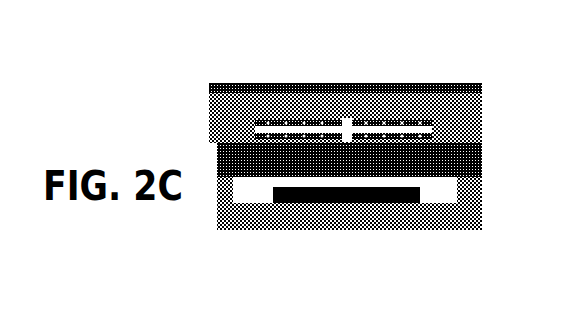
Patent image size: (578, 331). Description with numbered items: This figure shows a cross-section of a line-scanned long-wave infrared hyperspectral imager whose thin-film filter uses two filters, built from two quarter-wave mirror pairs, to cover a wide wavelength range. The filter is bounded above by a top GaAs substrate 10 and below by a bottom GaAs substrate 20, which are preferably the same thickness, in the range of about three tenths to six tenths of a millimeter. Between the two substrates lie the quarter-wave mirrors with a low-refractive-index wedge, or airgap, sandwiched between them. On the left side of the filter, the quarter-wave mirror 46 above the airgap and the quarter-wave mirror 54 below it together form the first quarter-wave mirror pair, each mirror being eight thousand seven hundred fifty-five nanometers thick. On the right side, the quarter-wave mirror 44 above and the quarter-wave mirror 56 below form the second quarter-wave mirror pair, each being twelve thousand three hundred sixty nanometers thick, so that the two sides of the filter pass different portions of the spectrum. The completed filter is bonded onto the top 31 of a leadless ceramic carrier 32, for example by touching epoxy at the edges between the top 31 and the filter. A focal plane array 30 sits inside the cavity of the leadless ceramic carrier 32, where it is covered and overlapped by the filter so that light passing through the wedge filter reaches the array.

The top GaAs substrate 10 is at (457, 113).
The bottom GaAs substrate 20 is at (458, 165).
The focal plane array 30 is at (357, 207).
The top of leadless ceramic carrier 31 is at (217, 193).
The leadless ceramic carrier 32 is at (463, 217).
The quarter-wave mirror 44 is at (412, 121).
The quarter-wave mirror 46 is at (318, 121).
The quarter-wave mirror 54 is at (322, 140).
The quarter-wave mirror 56 is at (417, 140).